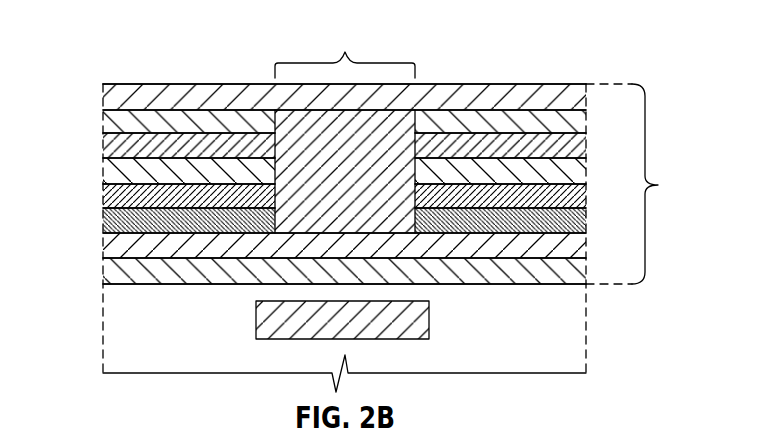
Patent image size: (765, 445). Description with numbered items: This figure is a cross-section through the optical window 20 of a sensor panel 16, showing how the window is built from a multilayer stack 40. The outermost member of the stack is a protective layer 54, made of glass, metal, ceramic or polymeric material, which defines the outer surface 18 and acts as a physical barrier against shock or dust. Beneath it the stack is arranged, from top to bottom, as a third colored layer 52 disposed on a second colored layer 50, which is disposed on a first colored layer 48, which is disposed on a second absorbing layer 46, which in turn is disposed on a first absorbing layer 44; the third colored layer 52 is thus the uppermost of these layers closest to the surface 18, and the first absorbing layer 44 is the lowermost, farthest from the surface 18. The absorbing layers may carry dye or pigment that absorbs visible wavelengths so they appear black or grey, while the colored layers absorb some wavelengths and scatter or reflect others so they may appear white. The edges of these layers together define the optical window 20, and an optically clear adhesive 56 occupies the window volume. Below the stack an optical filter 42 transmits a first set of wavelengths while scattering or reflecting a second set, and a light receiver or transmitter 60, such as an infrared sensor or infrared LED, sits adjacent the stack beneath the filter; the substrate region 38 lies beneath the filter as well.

The sensor panel 16 is at (102, 354).
The surface 18 is at (153, 84).
The optical window 20 is at (345, 50).
The dielectric layer 38 is at (118, 311).
The multilayer stack 40 is at (638, 184).
The optical filter 42 is at (118, 271).
The first absorbing layer 44 is at (107, 218).
The second absorbing layer 46 is at (117, 202).
The first colored layer 48 is at (118, 180).
The second colored layer 50 is at (128, 147).
The third colored layer 52 is at (110, 128).
The protective layer 54 is at (118, 102).
The optically clear adhesive 56 is at (358, 198).
The light receiver or transmitter 60 is at (256, 320).